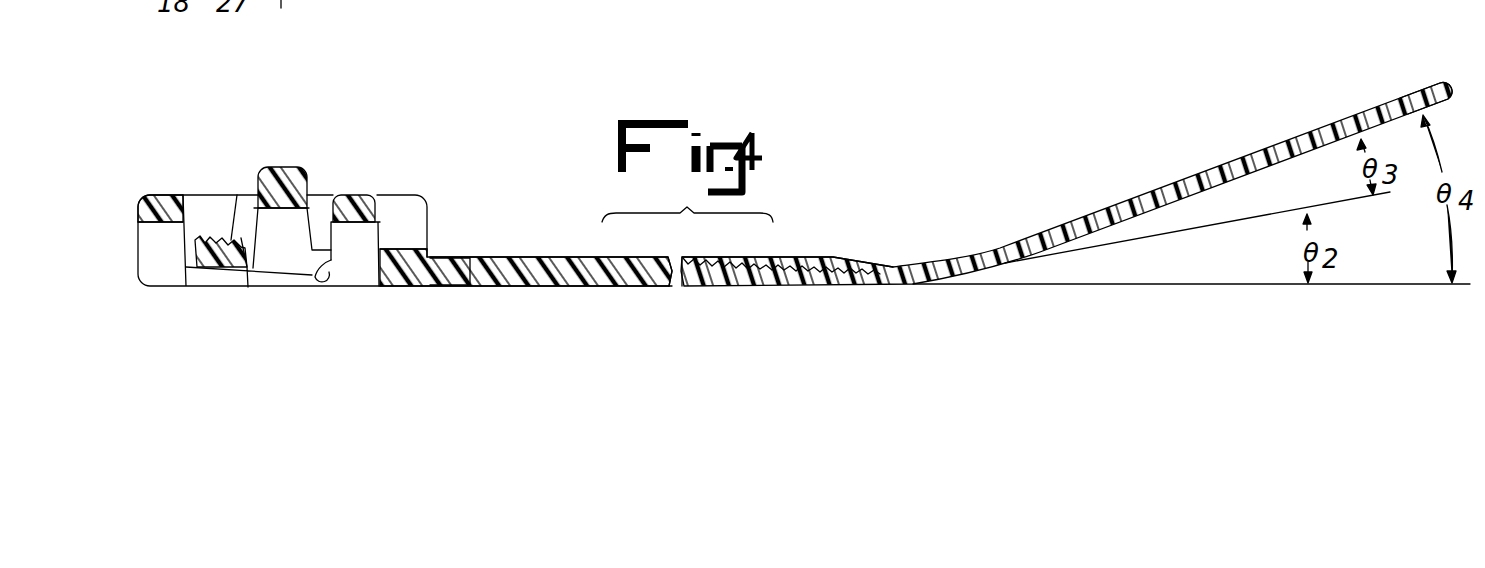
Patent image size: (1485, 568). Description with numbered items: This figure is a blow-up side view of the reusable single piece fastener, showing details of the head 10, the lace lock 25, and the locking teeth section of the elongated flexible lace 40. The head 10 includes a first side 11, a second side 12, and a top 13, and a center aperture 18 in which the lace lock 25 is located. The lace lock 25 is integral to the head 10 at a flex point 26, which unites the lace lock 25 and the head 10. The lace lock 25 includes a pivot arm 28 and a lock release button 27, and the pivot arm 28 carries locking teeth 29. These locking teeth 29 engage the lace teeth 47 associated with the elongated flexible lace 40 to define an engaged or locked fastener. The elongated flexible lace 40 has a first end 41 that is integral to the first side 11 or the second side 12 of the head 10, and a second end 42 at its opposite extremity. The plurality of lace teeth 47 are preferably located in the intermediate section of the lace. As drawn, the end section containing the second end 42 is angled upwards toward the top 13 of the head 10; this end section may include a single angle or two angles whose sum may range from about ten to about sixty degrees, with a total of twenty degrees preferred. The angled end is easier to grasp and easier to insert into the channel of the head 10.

The head 10 is at (146, 257).
The first side 11 is at (432, 256).
The second side 12 is at (138, 227).
The top 13 is at (397, 192).
The center aperture 18 is at (322, 203).
The lace lock 25 is at (268, 222).
The flex point 26 is at (319, 286).
The lock release button 27 is at (283, 167).
The pivot arm 28 is at (248, 287).
The locking teeth 29 is at (206, 236).
The elongated flexible lace 40 is at (907, 262).
The first end 41 is at (438, 262).
The second end 42 is at (1427, 88).
The lace teeth 47 is at (780, 258).